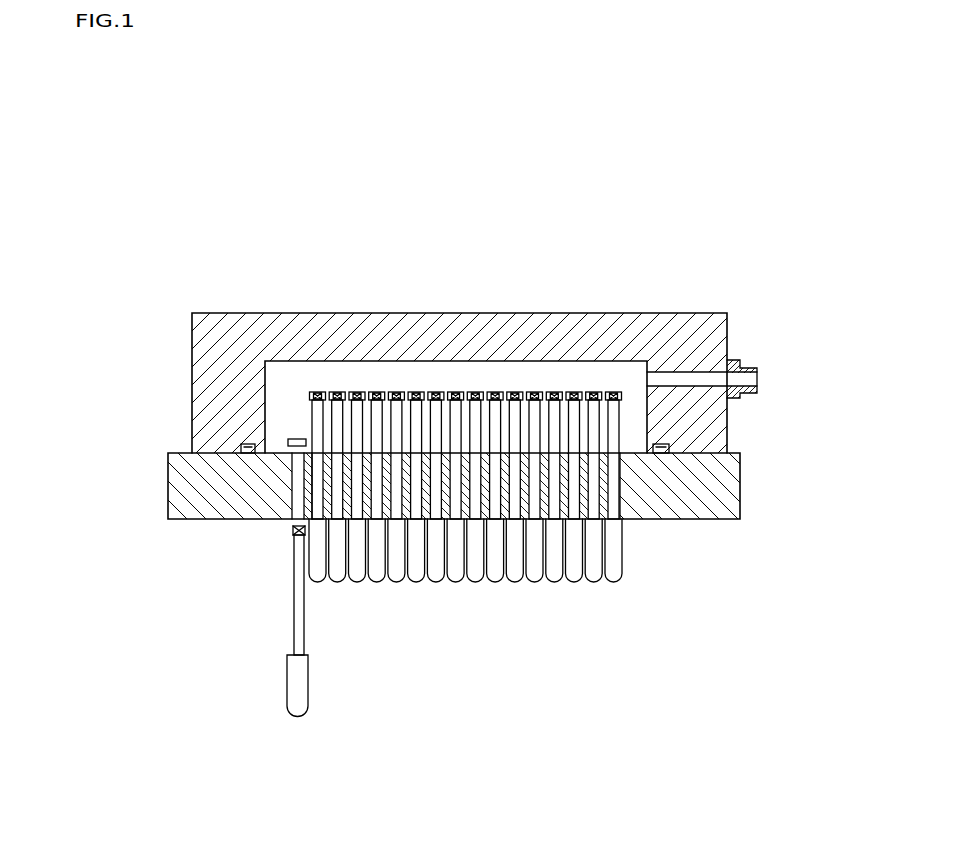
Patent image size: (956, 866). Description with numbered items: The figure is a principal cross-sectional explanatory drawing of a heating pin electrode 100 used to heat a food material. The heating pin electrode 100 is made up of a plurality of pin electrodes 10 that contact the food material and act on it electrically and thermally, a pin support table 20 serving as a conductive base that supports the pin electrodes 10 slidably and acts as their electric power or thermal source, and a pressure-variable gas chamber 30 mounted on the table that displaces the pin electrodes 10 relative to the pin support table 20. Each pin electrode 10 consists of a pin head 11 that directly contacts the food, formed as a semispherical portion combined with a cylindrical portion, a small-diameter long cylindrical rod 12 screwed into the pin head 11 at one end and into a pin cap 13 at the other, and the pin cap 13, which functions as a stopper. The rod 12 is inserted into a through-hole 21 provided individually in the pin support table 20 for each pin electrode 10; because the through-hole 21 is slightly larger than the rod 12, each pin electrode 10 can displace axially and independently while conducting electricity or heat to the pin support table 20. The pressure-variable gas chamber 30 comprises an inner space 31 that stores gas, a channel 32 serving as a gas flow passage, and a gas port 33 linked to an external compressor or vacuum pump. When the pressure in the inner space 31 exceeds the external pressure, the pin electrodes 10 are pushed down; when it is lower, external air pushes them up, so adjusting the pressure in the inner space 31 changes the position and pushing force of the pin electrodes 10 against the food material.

The heating pin electrode 100 is at (500, 148).
The pressure-variable gas chamber 30 is at (558, 292).
The inner space 31 is at (292, 375).
The channel 32 is at (665, 380).
The gas port 33 is at (748, 367).
The pin support table 20 is at (765, 573).
The through-hole 21 is at (298, 498).
The pin electrode 10 is at (152, 528).
The pin head 11 is at (291, 684).
The rod 12 is at (290, 606).
The pin cap 13 is at (290, 443).